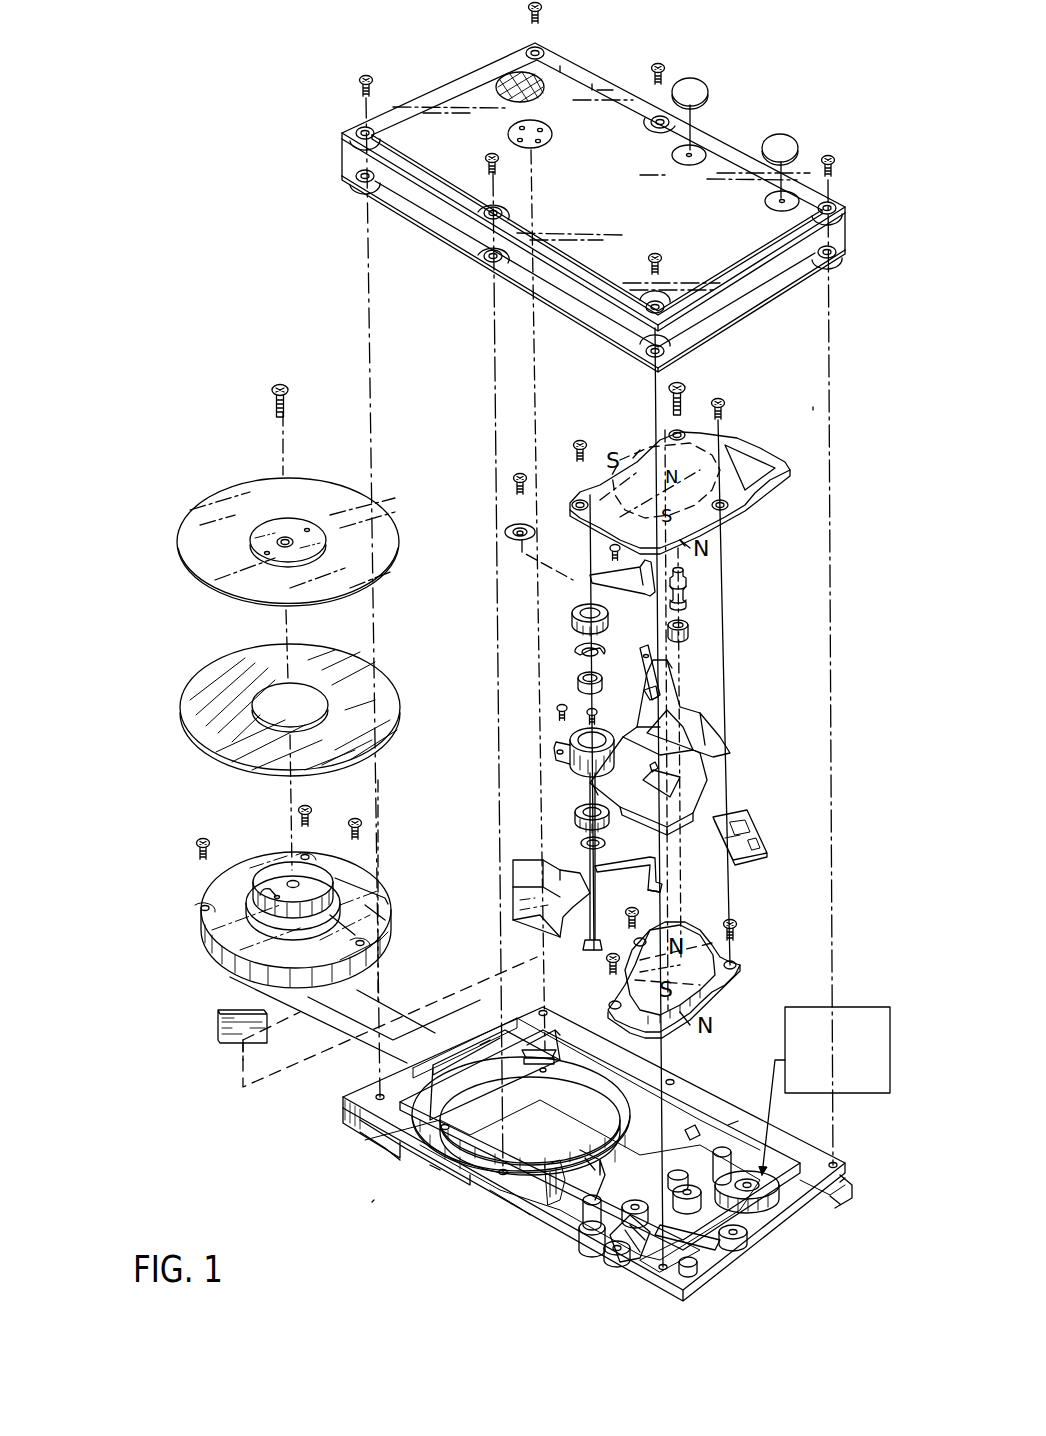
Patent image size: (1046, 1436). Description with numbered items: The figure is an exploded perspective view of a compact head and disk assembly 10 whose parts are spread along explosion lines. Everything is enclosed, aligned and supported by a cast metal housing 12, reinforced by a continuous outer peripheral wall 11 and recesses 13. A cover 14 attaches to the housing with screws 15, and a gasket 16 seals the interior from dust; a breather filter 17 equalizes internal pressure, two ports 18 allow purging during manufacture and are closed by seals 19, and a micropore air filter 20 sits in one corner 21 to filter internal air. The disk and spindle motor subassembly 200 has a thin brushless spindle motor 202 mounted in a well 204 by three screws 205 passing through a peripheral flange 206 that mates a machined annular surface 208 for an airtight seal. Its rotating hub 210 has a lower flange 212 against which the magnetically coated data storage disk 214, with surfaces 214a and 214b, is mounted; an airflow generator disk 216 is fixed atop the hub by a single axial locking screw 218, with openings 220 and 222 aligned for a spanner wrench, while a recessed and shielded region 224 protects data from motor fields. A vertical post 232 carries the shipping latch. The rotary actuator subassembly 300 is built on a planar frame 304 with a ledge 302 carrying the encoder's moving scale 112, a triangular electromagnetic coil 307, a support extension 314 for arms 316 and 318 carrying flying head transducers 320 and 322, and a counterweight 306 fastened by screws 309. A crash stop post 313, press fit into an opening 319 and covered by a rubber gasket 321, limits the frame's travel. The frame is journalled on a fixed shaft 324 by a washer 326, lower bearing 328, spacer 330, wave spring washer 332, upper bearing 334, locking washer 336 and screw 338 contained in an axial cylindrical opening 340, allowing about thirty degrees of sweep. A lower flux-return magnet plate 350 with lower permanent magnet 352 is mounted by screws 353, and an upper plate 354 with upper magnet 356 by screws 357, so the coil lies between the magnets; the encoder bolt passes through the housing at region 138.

The head and disk assembly 10 is at (372, 1202).
The continuous outer peripheral wall 11 is at (490, 1040).
The housing 12 is at (335, 1113).
The recesses 13 is at (378, 1155).
The cover 14 is at (465, 88).
The screws 15 is at (543, 15).
The gasket 16 is at (440, 235).
The breather filter 17 is at (553, 138).
The ports 18 is at (692, 152).
The seals 19 is at (693, 88).
The micropore air filter 20 is at (220, 1035).
The corner 21 is at (545, 1040).
The moving scale 112 is at (752, 815).
The region 138 is at (762, 1180).
The disk, spindle and direct drive spindle motor subassembly 200 is at (178, 958).
The spindle motor 202 is at (270, 868).
The well 204 is at (530, 1126).
The screws 205 is at (312, 815).
The peripheral flange 206 is at (372, 928).
The machined annular surface 208 is at (465, 1100).
The rotating hub 210 is at (240, 893).
The lower flange 212 is at (334, 868).
The data storage disk 214 is at (182, 735).
The disk upper surface 214a is at (256, 714).
The disk lower surface 214b is at (242, 768).
The airflow generator disk 216 is at (212, 500).
The axial locking screw 218 is at (270, 395).
The peripheral openings 220 is at (308, 527).
The openings 222 is at (308, 866).
The recessed and shielded region 224 is at (388, 898).
The vertical post 232 is at (590, 1185).
The rotary actuator and motor subassembly 300 is at (742, 755).
The ledge 302 is at (720, 737).
The rotary actuator frame 304 is at (614, 736).
The counterweight 306 is at (513, 886).
The electromagnetic coil 307 is at (708, 782).
The screws 309 is at (560, 710).
The crash stop post 313 is at (690, 595).
The support extension 314 is at (640, 660).
The arm 316 is at (638, 590).
The arm 318 is at (626, 872).
The opening 319 is at (690, 1130).
The data transducer 320 is at (590, 577).
The cylinder rubber gasket 321 is at (688, 630).
The data transducer 322 is at (600, 866).
The fixed shaft 324 is at (570, 1225).
The washer 326 is at (581, 843).
The lower bearing 328 is at (575, 812).
The spacer 330 is at (577, 680).
The wave spring washer 332 is at (574, 652).
The upper bearing 334 is at (572, 615).
The locking washer 336 is at (504, 528).
The screw 338 is at (515, 476).
The axial cylindrical opening 340 is at (570, 742).
The lower flux-return magnet plate 350 is at (745, 963).
The lower permanent magnet 352 is at (712, 992).
The screws 353 is at (650, 922).
The upper flux-return magnet plate 354 is at (735, 500).
The upper permanent magnet 356 is at (700, 536).
The screws 357 is at (690, 398).